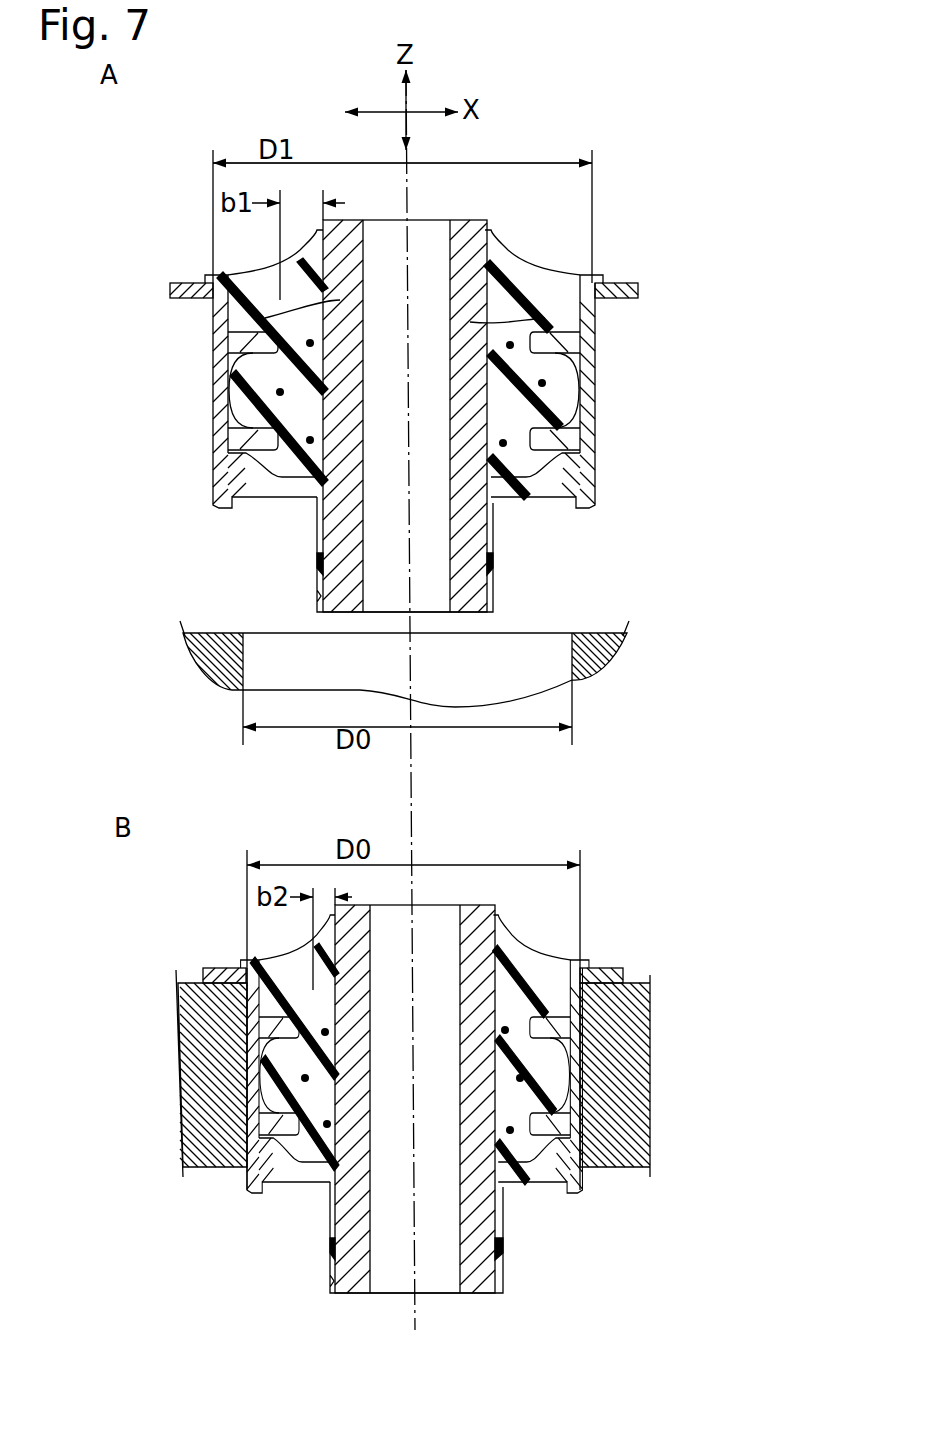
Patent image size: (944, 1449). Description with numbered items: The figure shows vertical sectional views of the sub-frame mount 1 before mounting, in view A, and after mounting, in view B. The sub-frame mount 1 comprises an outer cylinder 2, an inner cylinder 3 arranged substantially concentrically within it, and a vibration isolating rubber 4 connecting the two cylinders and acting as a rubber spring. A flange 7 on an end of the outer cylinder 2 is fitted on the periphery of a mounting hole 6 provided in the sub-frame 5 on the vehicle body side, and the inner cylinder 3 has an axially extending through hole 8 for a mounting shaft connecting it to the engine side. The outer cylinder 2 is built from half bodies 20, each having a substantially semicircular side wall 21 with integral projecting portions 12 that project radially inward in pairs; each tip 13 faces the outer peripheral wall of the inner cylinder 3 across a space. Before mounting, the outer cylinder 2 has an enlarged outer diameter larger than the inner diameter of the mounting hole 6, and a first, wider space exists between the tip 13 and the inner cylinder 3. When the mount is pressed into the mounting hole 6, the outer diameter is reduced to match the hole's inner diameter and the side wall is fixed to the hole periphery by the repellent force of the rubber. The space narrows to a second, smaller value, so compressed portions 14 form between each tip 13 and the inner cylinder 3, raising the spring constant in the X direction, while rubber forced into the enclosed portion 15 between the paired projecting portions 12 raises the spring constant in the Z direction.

The sub-frame mount 1 is at (167, 198).
The outer cylinder 2 is at (205, 400).
The inner cylinder 3 is at (460, 543).
The vibration isolating rubber 4 is at (540, 272).
The sub-frame 5 is at (197, 655).
The mounting hole 6 is at (243, 666).
The flange 7 is at (200, 283).
The through hole 8 is at (367, 593).
The projecting portions 12 is at (487, 300).
The tip 13 is at (512, 320).
The compressed portions 14 is at (310, 343).
The enclosed portion 15 is at (280, 392).
The half body 20 is at (222, 349).
The side wall 21 is at (222, 462).